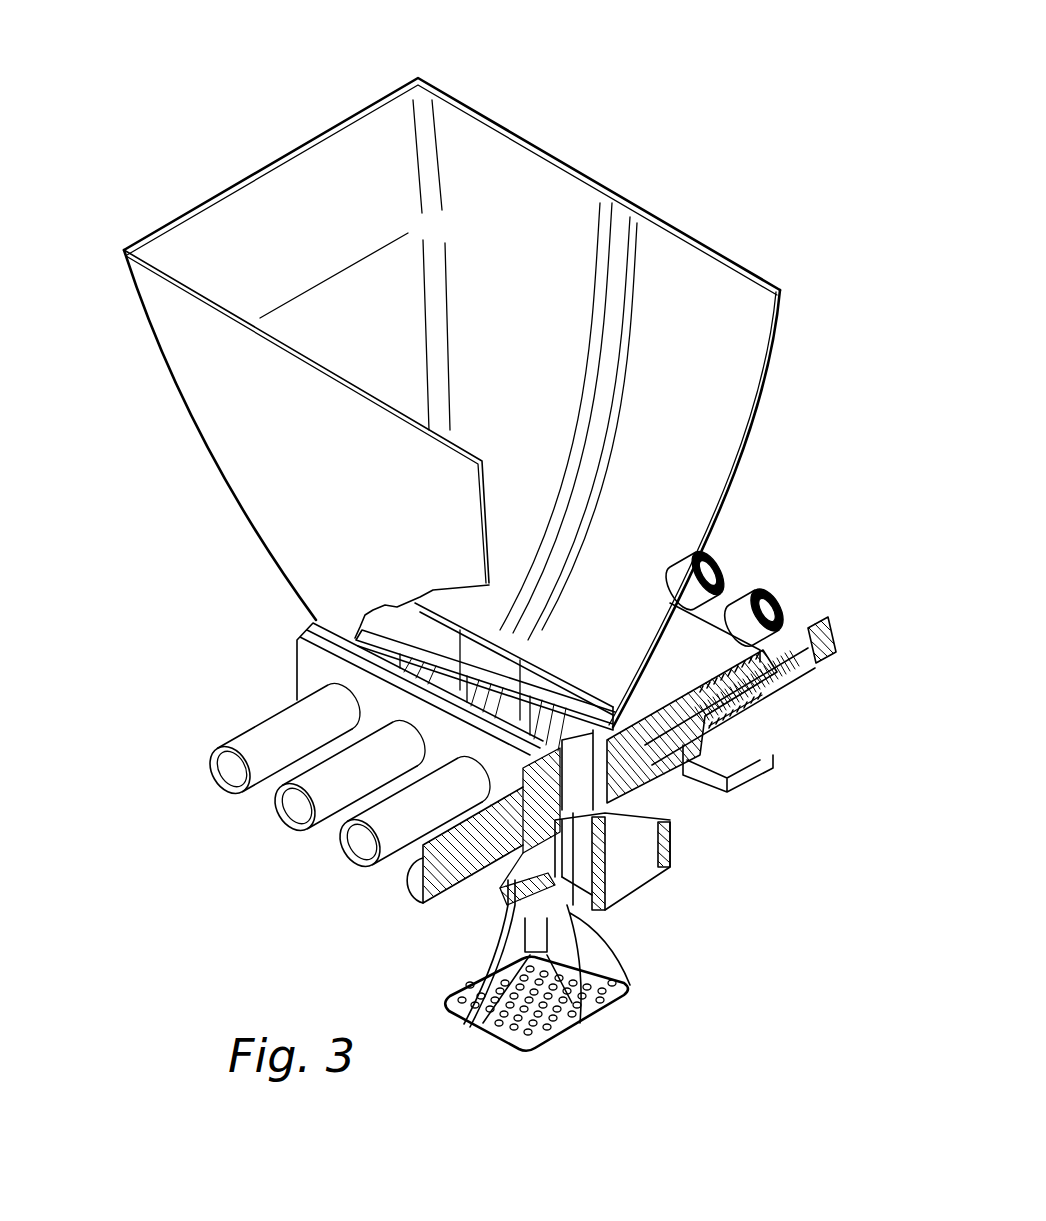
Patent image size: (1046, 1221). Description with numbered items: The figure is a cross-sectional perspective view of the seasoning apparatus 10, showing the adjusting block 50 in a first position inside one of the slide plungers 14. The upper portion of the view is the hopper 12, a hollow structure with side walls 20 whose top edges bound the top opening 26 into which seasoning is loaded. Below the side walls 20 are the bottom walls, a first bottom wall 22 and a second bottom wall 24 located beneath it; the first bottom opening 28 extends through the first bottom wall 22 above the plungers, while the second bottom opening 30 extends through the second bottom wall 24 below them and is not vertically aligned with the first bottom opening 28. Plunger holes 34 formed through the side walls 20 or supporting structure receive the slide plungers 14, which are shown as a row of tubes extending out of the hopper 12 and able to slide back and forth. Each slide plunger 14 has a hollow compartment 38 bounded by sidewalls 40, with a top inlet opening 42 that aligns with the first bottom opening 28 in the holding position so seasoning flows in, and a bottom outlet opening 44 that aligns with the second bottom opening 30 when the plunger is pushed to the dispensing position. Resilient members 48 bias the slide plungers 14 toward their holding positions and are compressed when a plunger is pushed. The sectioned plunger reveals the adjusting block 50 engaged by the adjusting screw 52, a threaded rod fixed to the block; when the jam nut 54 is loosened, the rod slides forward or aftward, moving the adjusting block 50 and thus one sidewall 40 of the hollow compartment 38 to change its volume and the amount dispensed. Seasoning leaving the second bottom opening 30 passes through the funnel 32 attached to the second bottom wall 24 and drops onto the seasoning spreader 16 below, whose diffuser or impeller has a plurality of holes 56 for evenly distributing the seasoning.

The seasoning apparatus 10 is at (238, 68).
The hopper 12 is at (200, 395).
The slide plungers 14 is at (240, 790).
The seasoning spreader 16 is at (610, 1012).
The side walls 20 is at (692, 272).
The first bottom wall 22 is at (673, 630).
The second bottom wall 24 is at (750, 785).
The top opening 26 is at (495, 172).
The first bottom opening 28 is at (560, 690).
The second bottom opening 30 is at (632, 870).
The funnel 32 is at (506, 926).
The plunger holes 34 is at (318, 697).
The hollow compartments 38 is at (380, 640).
The sidewalls 40 is at (530, 775).
The top inlet opening 42 is at (575, 760).
The bottom outlet opening 44 is at (578, 838).
The resilient members 48 is at (727, 665).
The adjusting block 50 is at (497, 690).
The adjusting screw 52 is at (790, 690).
The jam nut 54 is at (735, 578).
The holes 56 is at (565, 1020).